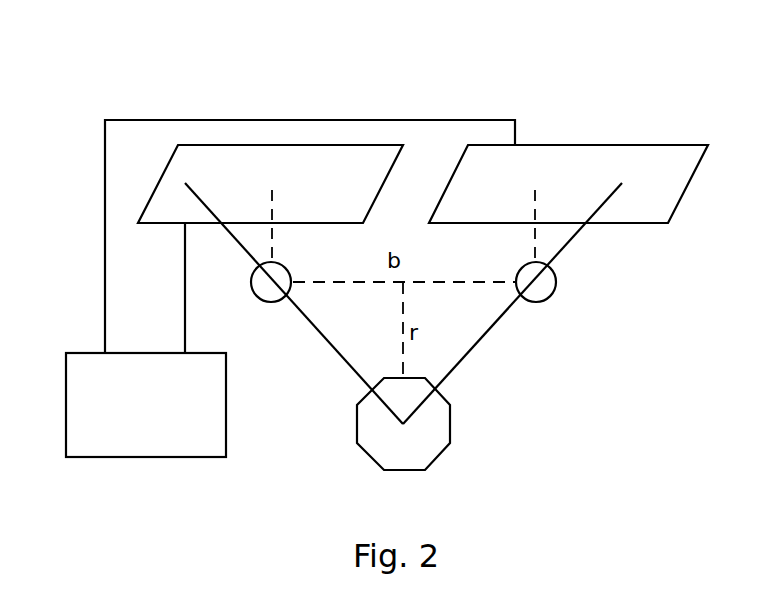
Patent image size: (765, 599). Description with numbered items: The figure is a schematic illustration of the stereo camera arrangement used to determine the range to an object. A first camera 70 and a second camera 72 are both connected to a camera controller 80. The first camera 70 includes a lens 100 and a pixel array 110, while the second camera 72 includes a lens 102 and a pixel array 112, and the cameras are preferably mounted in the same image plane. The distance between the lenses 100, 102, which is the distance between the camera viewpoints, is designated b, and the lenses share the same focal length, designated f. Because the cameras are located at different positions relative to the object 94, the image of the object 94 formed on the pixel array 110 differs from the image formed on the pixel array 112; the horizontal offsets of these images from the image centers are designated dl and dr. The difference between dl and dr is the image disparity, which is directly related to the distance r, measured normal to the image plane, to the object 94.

The first camera 70 is at (226, 226).
The second camera 72 is at (555, 223).
The camera controller 80 is at (227, 398).
The object 94 is at (450, 405).
The lens 100 is at (266, 301).
The lens 102 is at (539, 303).
The pixel array 110 is at (160, 185).
The pixel array 112 is at (570, 145).